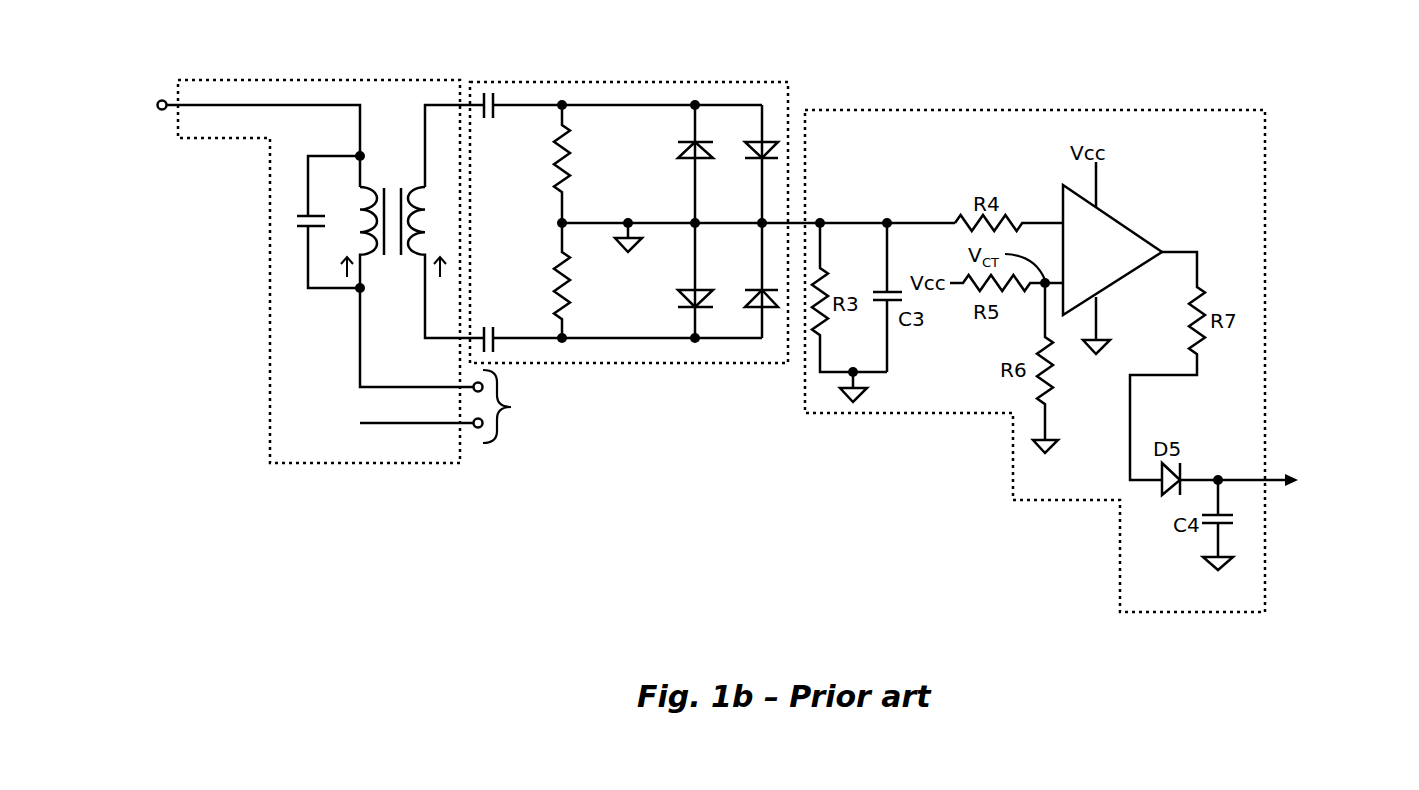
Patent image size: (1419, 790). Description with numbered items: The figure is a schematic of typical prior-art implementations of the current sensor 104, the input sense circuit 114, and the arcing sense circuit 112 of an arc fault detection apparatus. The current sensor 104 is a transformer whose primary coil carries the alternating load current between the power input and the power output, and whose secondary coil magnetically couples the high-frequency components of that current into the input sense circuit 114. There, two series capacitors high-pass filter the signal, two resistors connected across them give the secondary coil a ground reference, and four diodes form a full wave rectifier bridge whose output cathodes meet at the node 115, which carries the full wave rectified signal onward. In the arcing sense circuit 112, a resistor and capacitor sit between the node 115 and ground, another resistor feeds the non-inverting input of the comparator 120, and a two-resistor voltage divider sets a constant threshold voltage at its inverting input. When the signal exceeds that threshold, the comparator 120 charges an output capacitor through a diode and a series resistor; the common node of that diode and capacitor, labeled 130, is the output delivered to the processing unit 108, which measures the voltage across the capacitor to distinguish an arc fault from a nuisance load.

The current sensor 104 is at (394, 465).
The input sense circuit 114 is at (700, 365).
The node 115 is at (760, 218).
The arcing sense circuit 112 is at (947, 415).
The comparator 120 is at (1127, 265).
The output node to processing unit 130 is at (1258, 478).
The processing unit 108 is at (1344, 479).